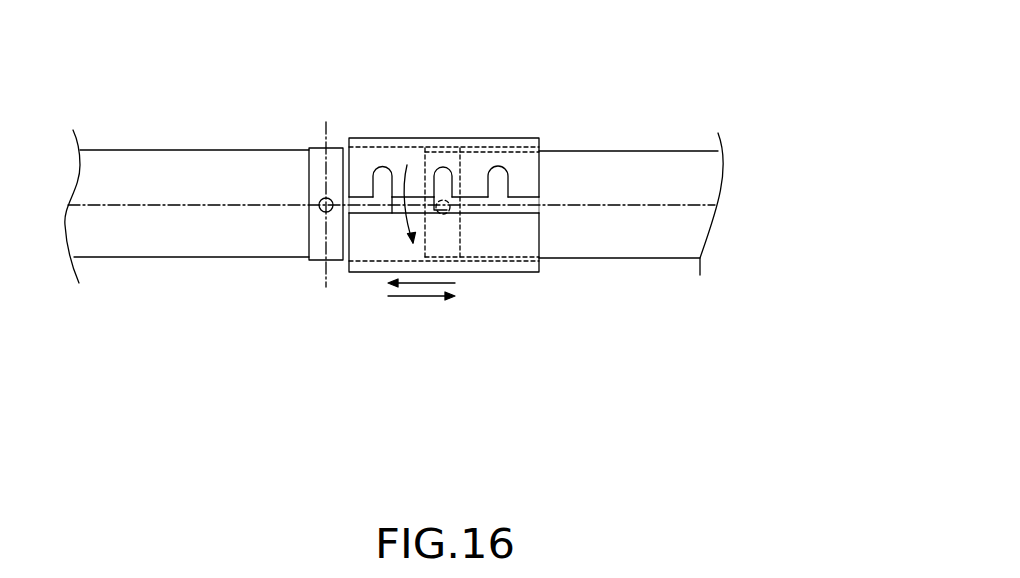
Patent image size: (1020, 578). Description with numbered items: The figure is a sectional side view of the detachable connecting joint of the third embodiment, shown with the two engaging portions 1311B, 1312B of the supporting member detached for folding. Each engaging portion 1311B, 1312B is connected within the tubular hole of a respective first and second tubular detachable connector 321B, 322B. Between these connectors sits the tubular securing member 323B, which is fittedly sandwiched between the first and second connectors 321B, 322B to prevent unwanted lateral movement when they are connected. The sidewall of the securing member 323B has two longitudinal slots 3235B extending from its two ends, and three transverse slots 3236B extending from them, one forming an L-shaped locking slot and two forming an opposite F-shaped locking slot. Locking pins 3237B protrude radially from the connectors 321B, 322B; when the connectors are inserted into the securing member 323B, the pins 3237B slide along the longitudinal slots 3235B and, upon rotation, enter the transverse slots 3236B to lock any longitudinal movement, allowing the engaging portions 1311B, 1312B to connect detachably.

The engaging portion 1312B is at (147, 162).
The engaging portion 1311B is at (675, 165).
The second tubular detachable connector 322B is at (315, 267).
The securing member 323B is at (403, 157).
The transverse slot 3236B is at (380, 166).
The locking pin 3237B is at (318, 208).
The longitudinal slot 3235B is at (349, 209).
The first tubular detachable connector 321B is at (480, 285).